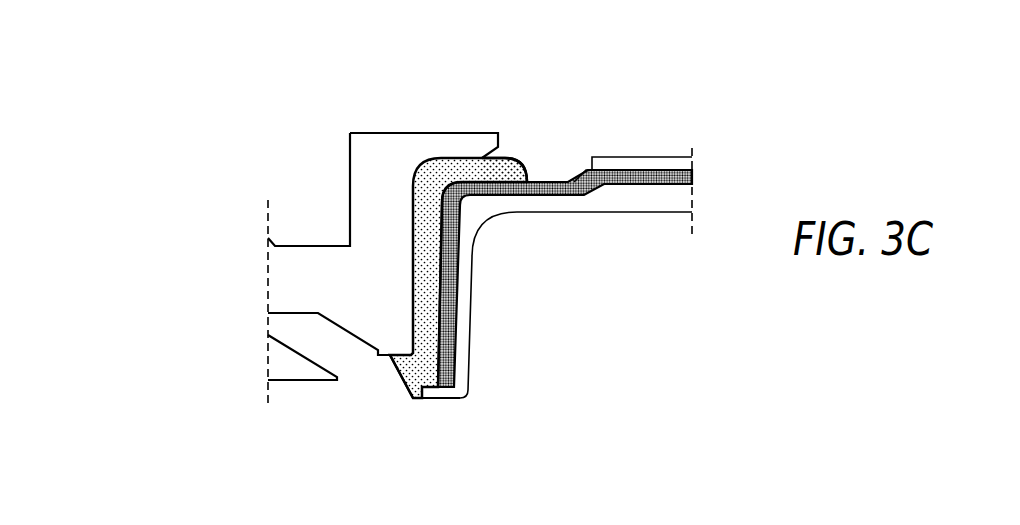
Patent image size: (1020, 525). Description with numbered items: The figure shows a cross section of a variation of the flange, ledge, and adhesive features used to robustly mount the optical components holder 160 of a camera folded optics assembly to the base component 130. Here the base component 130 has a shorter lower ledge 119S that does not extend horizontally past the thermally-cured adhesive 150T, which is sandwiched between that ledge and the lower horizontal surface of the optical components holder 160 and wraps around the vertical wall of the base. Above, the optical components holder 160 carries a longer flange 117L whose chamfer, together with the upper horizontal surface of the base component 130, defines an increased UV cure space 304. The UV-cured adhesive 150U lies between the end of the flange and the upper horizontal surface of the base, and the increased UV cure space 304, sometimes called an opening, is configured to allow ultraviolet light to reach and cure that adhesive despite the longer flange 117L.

The longer flange 117L is at (396, 80).
The UV-cured adhesive 150U is at (472, 94).
The optical components holder 160 is at (286, 229).
The thermally-cured adhesive 150T is at (298, 278).
The increased UV cure space 304 is at (552, 172).
The base component 130 is at (483, 218).
The shorter lower ledge 119S is at (450, 393).